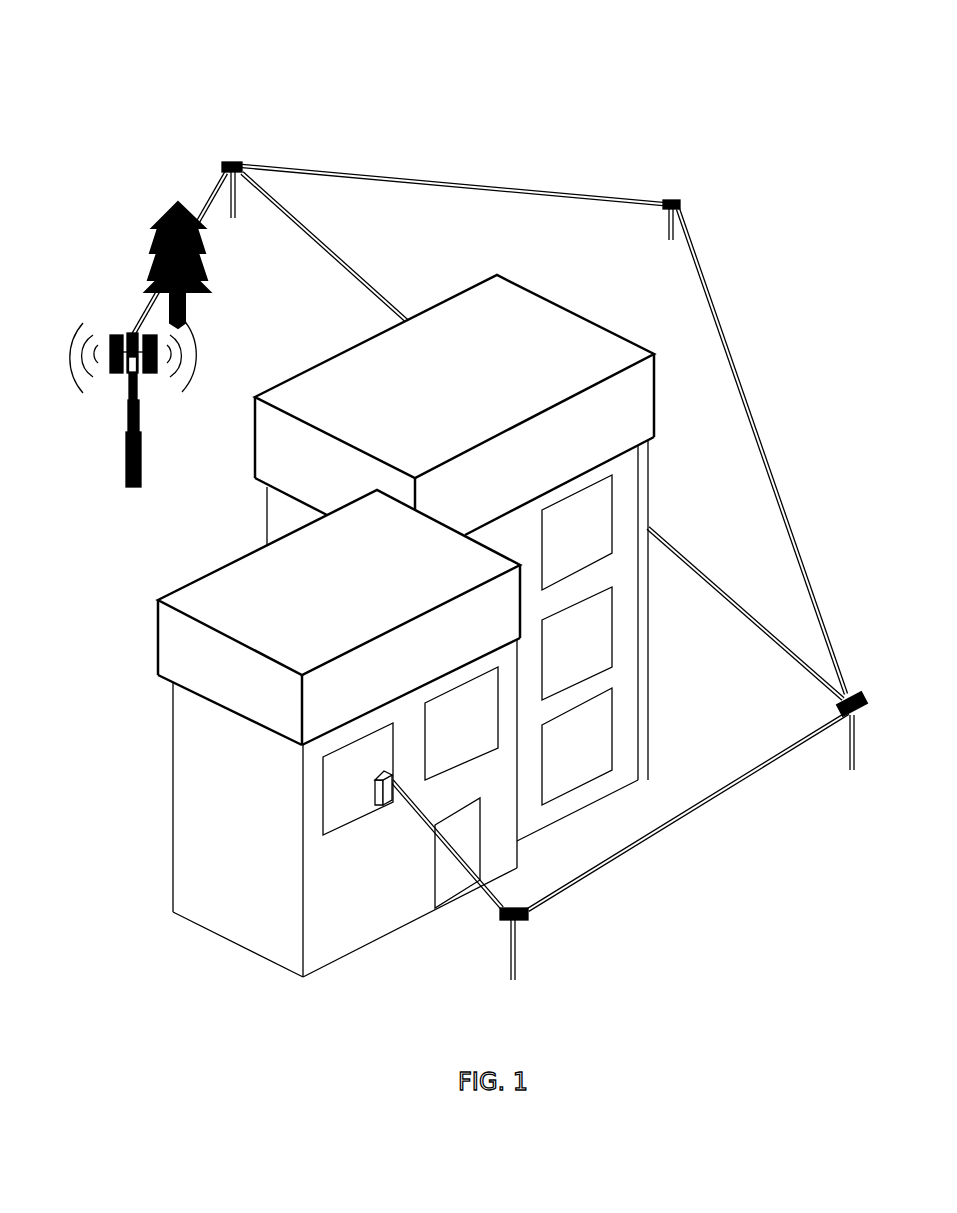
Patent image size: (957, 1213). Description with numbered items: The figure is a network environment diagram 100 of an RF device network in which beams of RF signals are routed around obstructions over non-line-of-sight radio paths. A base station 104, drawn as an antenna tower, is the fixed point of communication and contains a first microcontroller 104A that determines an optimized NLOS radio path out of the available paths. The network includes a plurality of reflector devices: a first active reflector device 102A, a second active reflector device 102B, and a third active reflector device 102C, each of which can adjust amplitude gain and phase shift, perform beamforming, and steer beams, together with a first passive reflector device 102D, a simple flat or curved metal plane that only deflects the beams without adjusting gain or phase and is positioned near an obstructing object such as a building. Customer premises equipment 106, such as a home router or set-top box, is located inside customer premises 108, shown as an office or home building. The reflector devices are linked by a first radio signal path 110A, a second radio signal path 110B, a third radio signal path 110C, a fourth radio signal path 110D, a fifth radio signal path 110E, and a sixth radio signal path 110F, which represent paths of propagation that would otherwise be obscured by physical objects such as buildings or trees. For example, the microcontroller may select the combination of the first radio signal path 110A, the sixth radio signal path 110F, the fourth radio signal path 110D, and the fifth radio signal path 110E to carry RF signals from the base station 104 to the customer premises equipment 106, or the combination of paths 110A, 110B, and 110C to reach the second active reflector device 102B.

The network environment diagram 100 is at (778, 56).
The first active reflector device 102A is at (240, 162).
The second active reflector device 102B is at (847, 718).
The third active reflector device 102C is at (505, 922).
The first passive reflector device 102D is at (677, 200).
The base station 104 is at (133, 426).
The first microcontroller 104A is at (127, 376).
The customer premises equipment 106 is at (378, 805).
The customer premises 108 is at (255, 478).
The first radio signal path 110A is at (203, 203).
The second radio signal path 110B is at (505, 185).
The third radio signal path 110C is at (760, 428).
The fourth radio signal path 110D is at (697, 806).
The fifth radio signal path 110E is at (462, 868).
The sixth radio signal path 110F is at (702, 576).